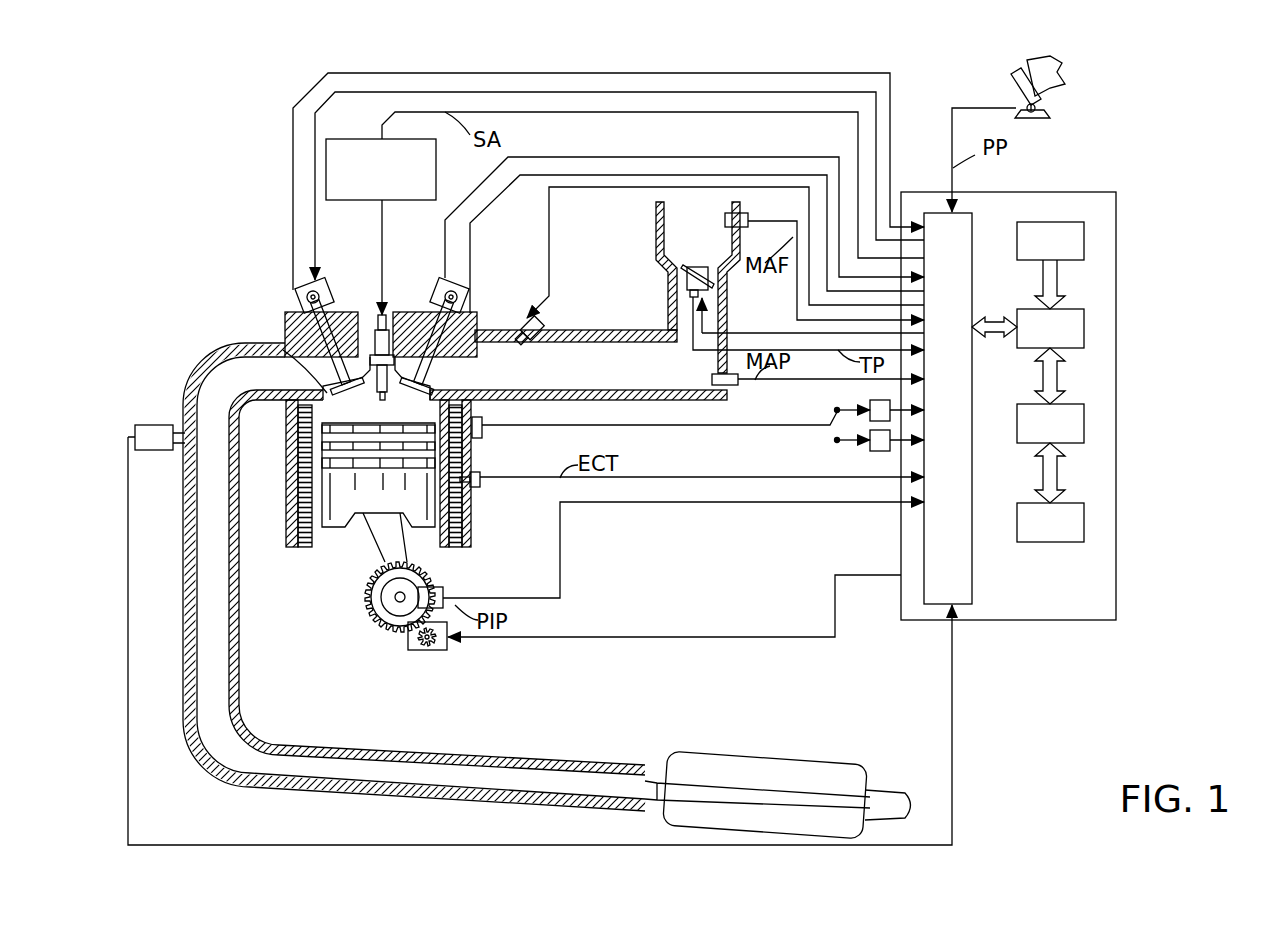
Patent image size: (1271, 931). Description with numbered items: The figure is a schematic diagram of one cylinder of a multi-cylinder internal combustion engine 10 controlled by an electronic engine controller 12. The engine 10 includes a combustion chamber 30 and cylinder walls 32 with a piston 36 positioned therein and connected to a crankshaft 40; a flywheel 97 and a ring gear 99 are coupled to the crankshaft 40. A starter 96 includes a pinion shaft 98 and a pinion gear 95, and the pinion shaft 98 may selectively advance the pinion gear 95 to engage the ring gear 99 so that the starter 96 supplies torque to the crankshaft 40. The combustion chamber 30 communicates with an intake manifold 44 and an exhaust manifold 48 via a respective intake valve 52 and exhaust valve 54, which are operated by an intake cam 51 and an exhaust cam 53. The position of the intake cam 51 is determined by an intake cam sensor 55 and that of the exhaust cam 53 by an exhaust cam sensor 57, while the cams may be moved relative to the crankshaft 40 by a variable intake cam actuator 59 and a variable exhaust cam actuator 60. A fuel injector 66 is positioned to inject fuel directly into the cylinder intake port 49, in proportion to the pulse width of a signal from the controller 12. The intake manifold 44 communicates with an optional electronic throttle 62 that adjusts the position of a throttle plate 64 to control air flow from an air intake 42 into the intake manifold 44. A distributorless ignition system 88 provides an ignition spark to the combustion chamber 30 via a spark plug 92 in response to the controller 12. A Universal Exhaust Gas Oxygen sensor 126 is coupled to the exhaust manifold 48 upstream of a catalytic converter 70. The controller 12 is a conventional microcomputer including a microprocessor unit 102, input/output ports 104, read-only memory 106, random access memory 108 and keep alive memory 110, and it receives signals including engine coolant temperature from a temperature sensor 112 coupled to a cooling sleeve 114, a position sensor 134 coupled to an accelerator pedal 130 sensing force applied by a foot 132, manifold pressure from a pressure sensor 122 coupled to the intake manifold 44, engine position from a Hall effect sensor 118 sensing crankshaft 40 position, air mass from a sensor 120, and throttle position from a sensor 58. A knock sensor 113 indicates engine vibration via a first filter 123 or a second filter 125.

The internal combustion engine 10 is at (222, 272).
The electronic engine controller 12 is at (1107, 192).
The combustion chamber 30 is at (308, 497).
The cylinder walls 32 is at (327, 537).
The piston 36 is at (365, 500).
The crankshaft 40 is at (388, 618).
The air intake 42 is at (719, 287).
The intake manifold 44 is at (578, 365).
The exhaust manifold 48 is at (414, 577).
The cylinder intake port 49 is at (465, 378).
The intake cam 51 is at (437, 275).
The intake valve 52 is at (369, 309).
The exhaust cam 53 is at (320, 275).
The exhaust valve 54 is at (300, 357).
The intake cam sensor 55 is at (452, 297).
The exhaust cam sensor 57 is at (308, 303).
The throttle position sensor 58 is at (687, 295).
The variable intake cam actuator 59 is at (428, 297).
The variable exhaust cam actuator 60 is at (327, 298).
The electronic throttle 62 is at (712, 278).
The throttle plate 64 is at (680, 272).
The fuel injector 66 is at (517, 320).
The catalytic converter 70 is at (673, 758).
The distributorless ignition system 88 is at (340, 139).
The spark plug 92 is at (373, 333).
The pinion gear 95 is at (440, 650).
The starter 96 is at (447, 648).
The flywheel 97 is at (375, 592).
The pinion shaft 98 is at (420, 640).
The ring gear 99 is at (395, 632).
The microprocessor unit 102 is at (1083, 327).
The input/output ports 104 is at (973, 220).
The read-only memory 106 is at (1083, 240).
The random access memory 108 is at (1083, 422).
The keep alive memory 110 is at (1083, 522).
The temperature sensor 112 is at (475, 487).
The knock sensor 113 is at (483, 417).
The cooling sleeve 114 is at (465, 505).
The Hall effect sensor 118 is at (450, 587).
The air mass sensor 120 is at (740, 218).
The pressure sensor 122 is at (732, 387).
The first filter 123 is at (870, 402).
The second filter 125 is at (870, 450).
The Universal Exhaust Gas Oxygen (UEGO) sensor 126 is at (135, 425).
The accelerator pedal 130 is at (1010, 83).
The foot 132 is at (1057, 72).
The position sensor 134 is at (1040, 108).